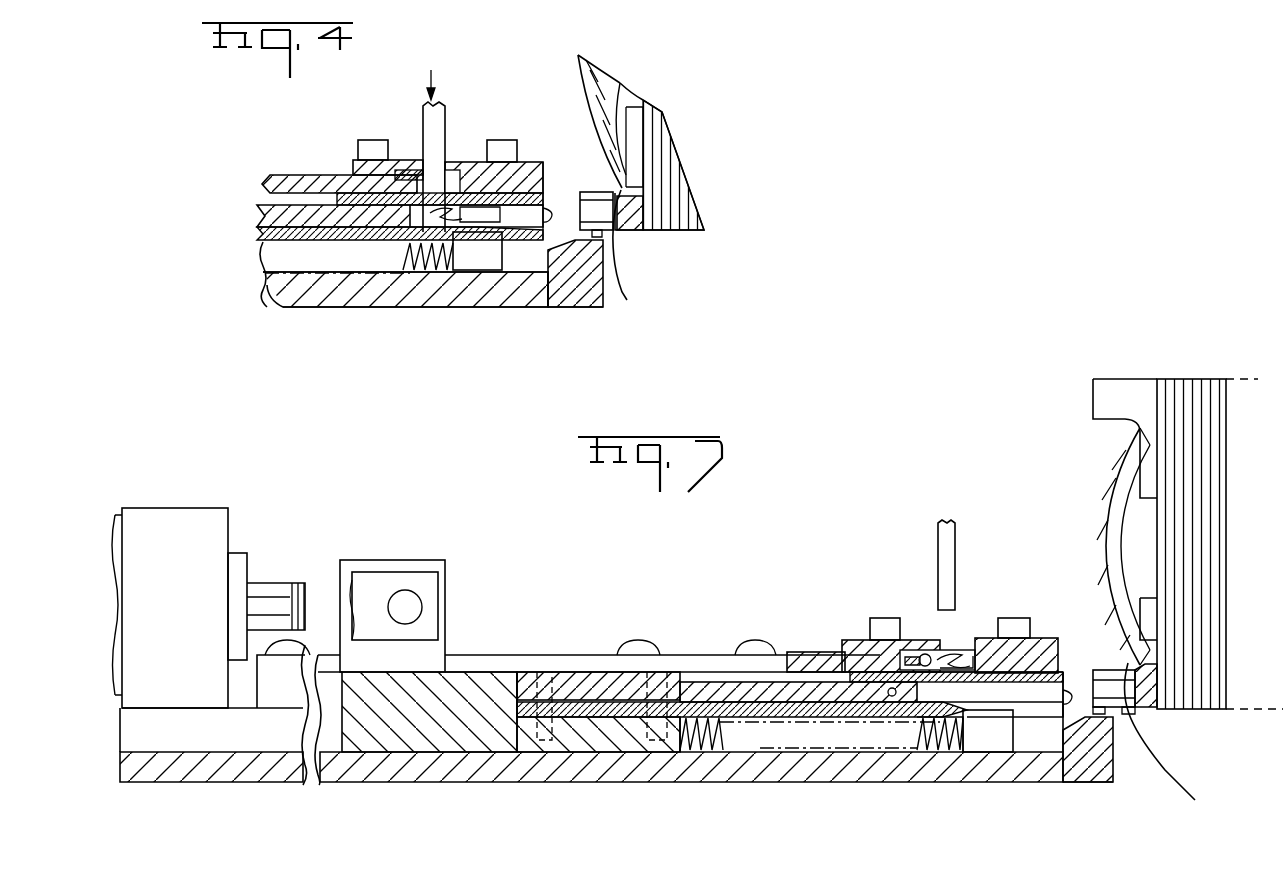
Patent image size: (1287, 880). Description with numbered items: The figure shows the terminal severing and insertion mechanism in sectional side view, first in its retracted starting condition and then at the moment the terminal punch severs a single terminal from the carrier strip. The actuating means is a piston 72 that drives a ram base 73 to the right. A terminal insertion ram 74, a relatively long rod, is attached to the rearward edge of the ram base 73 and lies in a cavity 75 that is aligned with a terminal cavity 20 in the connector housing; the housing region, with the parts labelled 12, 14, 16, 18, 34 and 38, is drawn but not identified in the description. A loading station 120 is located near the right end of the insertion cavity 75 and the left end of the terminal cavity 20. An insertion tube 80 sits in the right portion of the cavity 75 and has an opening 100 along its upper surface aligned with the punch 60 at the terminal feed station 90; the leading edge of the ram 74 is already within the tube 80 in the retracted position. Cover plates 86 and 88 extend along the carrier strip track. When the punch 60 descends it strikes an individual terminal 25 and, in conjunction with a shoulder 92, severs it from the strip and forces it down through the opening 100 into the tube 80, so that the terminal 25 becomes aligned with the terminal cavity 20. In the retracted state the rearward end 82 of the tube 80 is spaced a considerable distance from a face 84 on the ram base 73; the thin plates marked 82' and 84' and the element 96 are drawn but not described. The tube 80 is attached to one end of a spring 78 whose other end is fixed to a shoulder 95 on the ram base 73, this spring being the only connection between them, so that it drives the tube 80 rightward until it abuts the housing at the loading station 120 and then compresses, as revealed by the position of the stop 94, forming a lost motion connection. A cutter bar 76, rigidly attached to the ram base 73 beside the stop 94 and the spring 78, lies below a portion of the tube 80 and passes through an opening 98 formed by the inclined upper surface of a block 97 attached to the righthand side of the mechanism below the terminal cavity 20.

In FIG. 4, the housing 12 is at (662, 125).
In FIG. 3, the housing 12 is at (1197, 385).
In FIG. 4, the lens 14 is at (578, 85).
In FIG. 3, the lens 14 is at (1095, 500).
In FIG. 4, the wire 16 is at (627, 300).
In FIG. 3, the wire 16 is at (1195, 800).
In FIG. 3, the flange 18 is at (1122, 378).
In FIG. 4, the terminal cavity 20 is at (636, 212).
In FIG. 3, the terminal cavity 20 is at (1150, 693).
In FIG. 4, the terminal 25 is at (455, 212).
In FIG. 3, the terminal 25 is at (963, 652).
In FIG. 4, the bracket 34 is at (588, 192).
In FIG. 3, the bracket 34 is at (1095, 672).
In FIG. 3, the tab 38 is at (1130, 714).
In FIG. 4, the insertion punch 60 is at (445, 117).
In FIG. 3, the insertion punch 60 is at (955, 525).
In FIG. 3, the piston 72 is at (156, 532).
In FIG. 3, the ram base 73 is at (500, 690).
In FIG. 4, the terminal insertion ram 74 is at (265, 216).
In FIG. 3, the terminal insertion ram 74 is at (878, 688).
In FIG. 3, the cavity 75 is at (738, 665).
In FIG. 4, the cutter bar 76 is at (344, 238).
In FIG. 3, the cutter bar 76 is at (955, 720).
In FIG. 4, the spring 78 is at (398, 262).
In FIG. 3, the spring 78 is at (920, 752).
In FIG. 3, the insertion tube 80 is at (1006, 700).
In FIG. 4, the rearward end of tube 82 is at (339, 160).
In FIG. 3, the rearward end of tube 82 is at (817, 635).
In FIG. 3, the thin plate 82' is at (923, 650).
In FIG. 3, the face 84 is at (615, 637).
In FIG. 3, the thin slide plate 84' is at (742, 660).
In FIG. 4, the cover plate 86 is at (452, 162).
In FIG. 3, the cover plate 86 is at (980, 650).
In FIG. 4, the cover plate 88 is at (398, 160).
In FIG. 3, the cover plate 88 is at (905, 640).
In FIG. 3, the terminal loading station 90 is at (948, 655).
In FIG. 4, the shoulder 92 is at (420, 172).
In FIG. 3, the shoulder 92 is at (943, 656).
In FIG. 4, the stop 94 is at (475, 262).
In FIG. 3, the stop 94 is at (1000, 752).
In FIG. 3, the shoulder 95 is at (688, 752).
In FIG. 4, the nub 96 is at (546, 215).
In FIG. 3, the nub 96 is at (1066, 690).
In FIG. 4, the block 97 is at (560, 308).
In FIG. 3, the block 97 is at (1074, 784).
In FIG. 4, the opening 98 is at (597, 238).
In FIG. 3, the opening 98 is at (1099, 716).
In FIG. 3, the opening 100 is at (934, 660).
In FIG. 4, the loading station 120 is at (550, 206).
In FIG. 3, the loading station 120 is at (1075, 700).